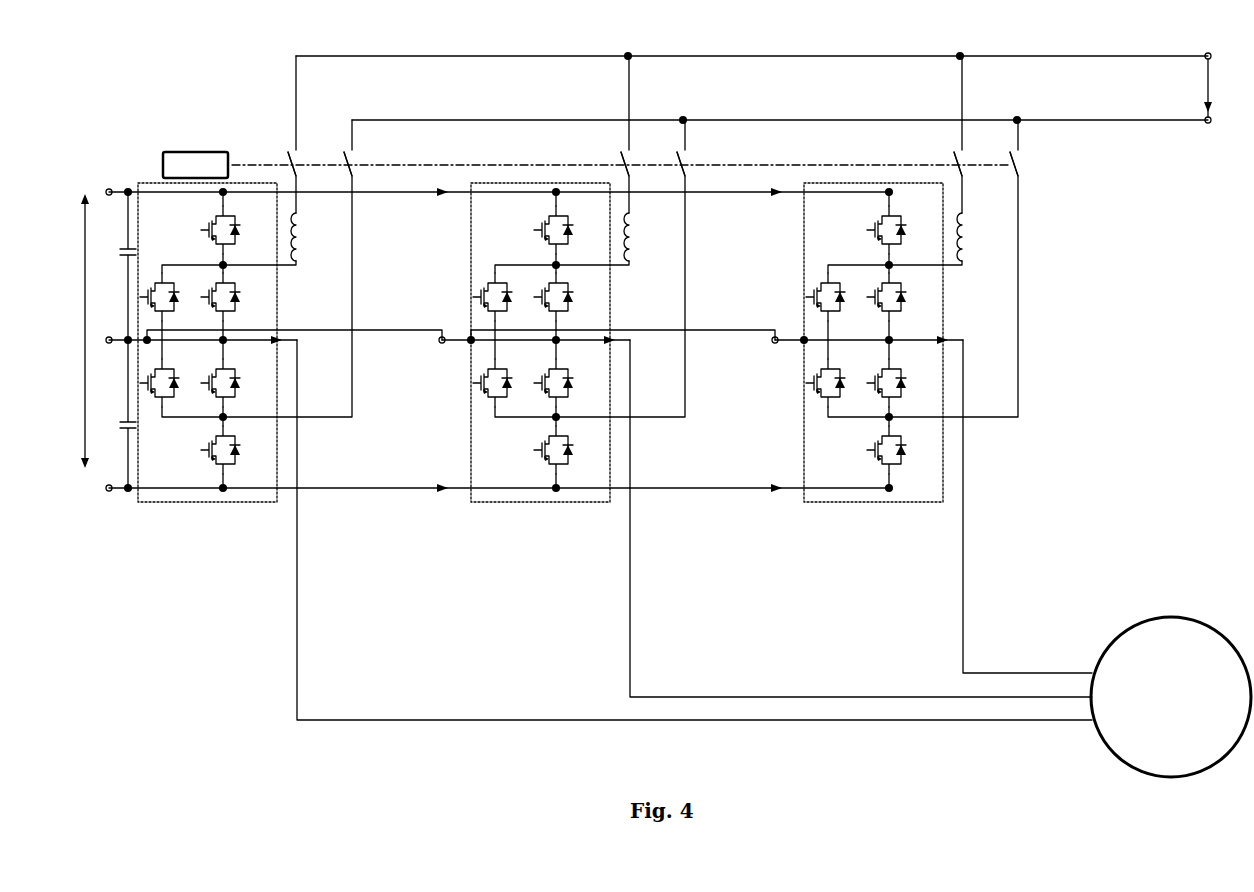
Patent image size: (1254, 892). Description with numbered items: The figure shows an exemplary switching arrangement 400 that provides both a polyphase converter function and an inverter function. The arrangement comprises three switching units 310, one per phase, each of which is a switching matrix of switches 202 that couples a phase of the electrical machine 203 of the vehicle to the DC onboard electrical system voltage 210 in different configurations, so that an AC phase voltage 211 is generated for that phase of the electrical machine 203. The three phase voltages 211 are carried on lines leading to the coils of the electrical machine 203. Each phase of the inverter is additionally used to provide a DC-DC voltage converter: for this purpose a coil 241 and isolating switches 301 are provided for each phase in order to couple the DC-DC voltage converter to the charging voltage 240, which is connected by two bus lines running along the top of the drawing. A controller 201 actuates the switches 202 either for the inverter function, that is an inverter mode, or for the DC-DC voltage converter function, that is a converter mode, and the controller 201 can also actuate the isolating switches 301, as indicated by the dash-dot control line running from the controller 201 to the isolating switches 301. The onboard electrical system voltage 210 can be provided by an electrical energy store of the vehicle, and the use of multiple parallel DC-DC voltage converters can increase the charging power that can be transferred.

The controller 201 is at (200, 150).
The switches 202 is at (250, 271).
The electrical machine 203 is at (1152, 618).
The onboard electrical system voltage 210 is at (86, 440).
The phase voltages 211 is at (470, 717).
The charging voltage 240 is at (1198, 83).
The coil 241 is at (302, 232).
The isolating switches 301 is at (358, 166).
The switching unit 310 is at (198, 503).
The switching arrangement 400 is at (1050, 462).